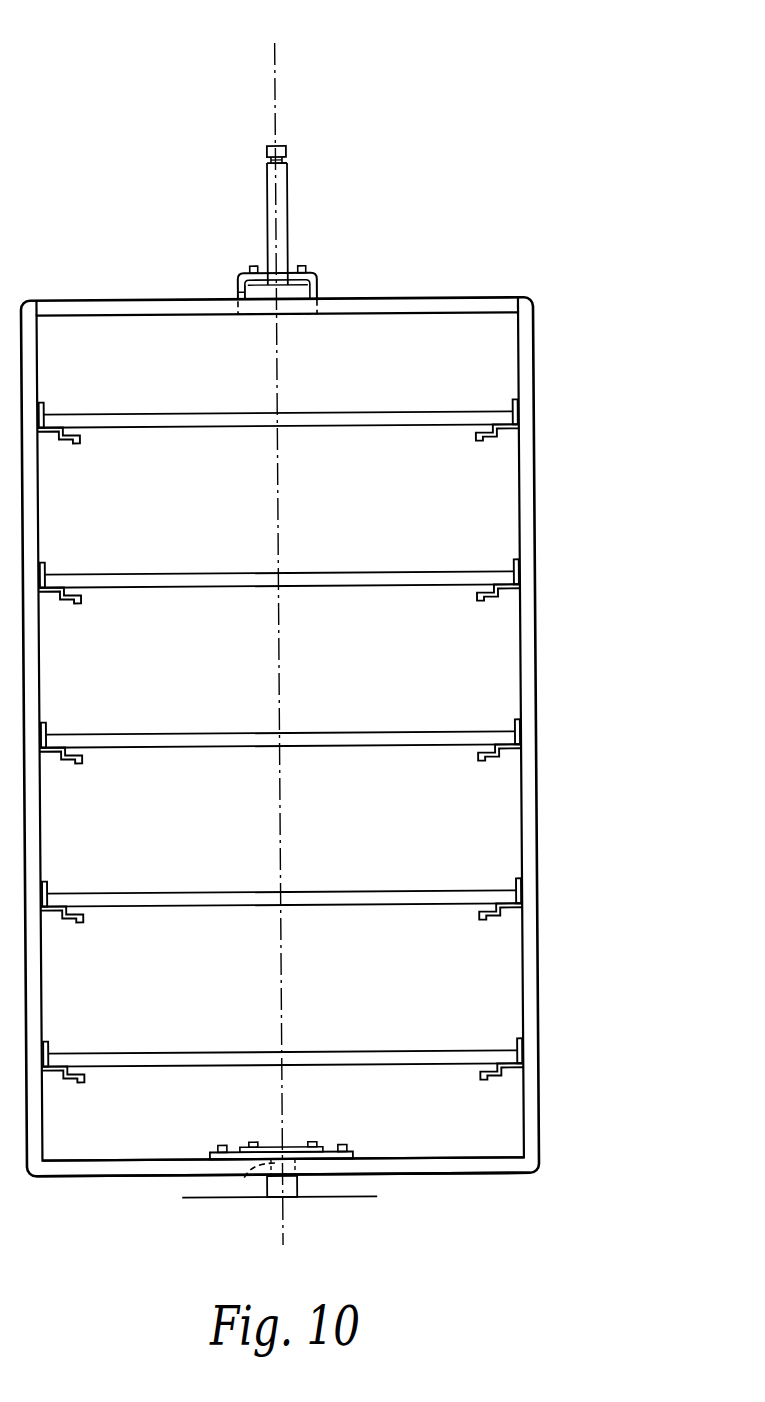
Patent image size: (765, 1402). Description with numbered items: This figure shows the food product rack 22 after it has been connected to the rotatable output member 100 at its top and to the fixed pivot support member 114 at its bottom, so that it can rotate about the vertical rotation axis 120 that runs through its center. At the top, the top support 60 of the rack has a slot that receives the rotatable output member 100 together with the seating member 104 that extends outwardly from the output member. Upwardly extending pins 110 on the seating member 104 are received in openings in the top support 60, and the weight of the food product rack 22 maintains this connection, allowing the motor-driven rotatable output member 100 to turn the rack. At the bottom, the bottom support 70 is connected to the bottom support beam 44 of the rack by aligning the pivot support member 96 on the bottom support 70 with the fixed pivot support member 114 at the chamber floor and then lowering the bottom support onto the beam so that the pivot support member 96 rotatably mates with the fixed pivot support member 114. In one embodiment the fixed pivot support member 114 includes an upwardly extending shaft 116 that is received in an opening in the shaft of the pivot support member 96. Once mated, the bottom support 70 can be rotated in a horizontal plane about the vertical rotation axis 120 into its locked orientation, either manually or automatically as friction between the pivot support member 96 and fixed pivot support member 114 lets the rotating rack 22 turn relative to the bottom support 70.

The food product rack 22 is at (538, 506).
The bottom support beam 44 is at (447, 1174).
The top support 60 is at (326, 287).
The bottom support 70 is at (349, 1146).
The pivot support member 96 is at (264, 1146).
The rotatable output member 100 is at (291, 183).
The seating member 104 is at (262, 284).
The pins 110 is at (306, 266).
The fixed pivot support member 114 is at (284, 1187).
The shaft 116 is at (240, 1180).
The vertical rotation axis 120 is at (278, 74).